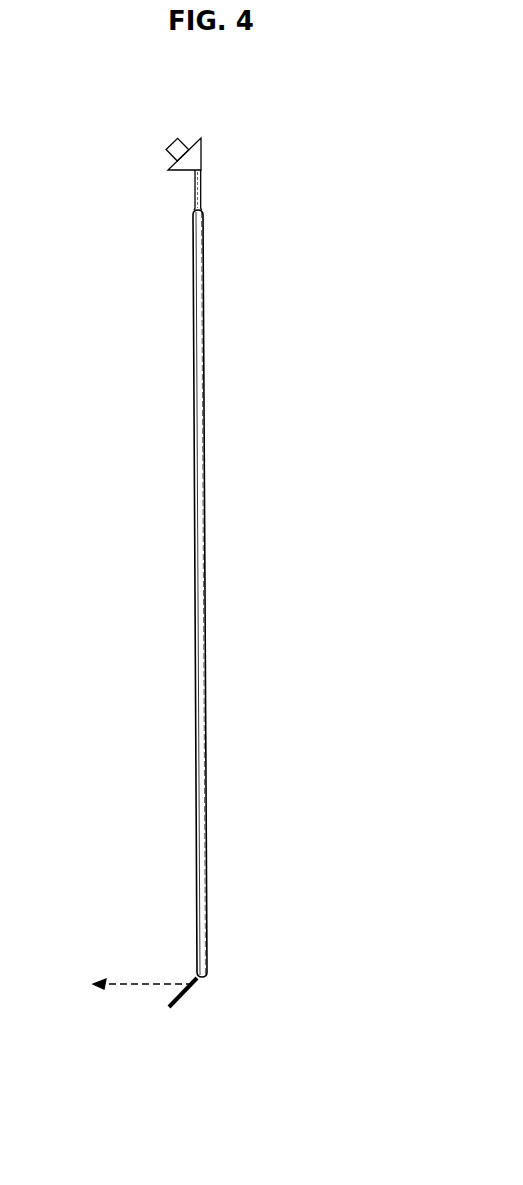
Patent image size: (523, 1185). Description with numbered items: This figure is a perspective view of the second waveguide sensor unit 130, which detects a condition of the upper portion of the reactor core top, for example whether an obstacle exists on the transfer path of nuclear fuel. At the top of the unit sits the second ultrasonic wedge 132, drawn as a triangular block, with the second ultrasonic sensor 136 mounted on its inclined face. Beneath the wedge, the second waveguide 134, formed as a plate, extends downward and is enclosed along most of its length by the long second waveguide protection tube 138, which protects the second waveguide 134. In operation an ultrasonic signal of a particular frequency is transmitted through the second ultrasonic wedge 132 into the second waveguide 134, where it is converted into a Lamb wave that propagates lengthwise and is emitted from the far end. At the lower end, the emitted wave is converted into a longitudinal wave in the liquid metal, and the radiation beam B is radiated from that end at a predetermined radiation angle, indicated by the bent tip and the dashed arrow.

The second waveguide sensor unit 130 is at (227, 345).
The second ultrasonic wedge 132 is at (180, 172).
The second waveguide 134 is at (201, 185).
The second ultrasonic sensor 136 is at (173, 145).
The second waveguide protection tube 138 is at (196, 505).
The radiation beam B is at (147, 982).